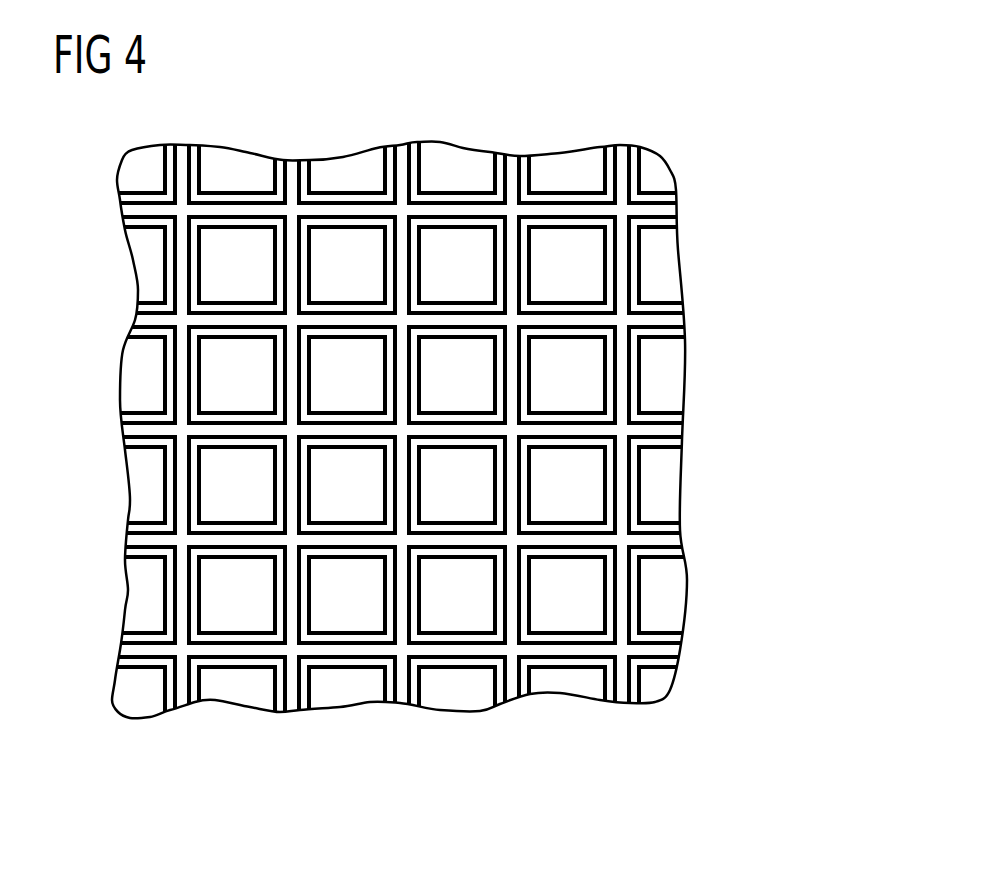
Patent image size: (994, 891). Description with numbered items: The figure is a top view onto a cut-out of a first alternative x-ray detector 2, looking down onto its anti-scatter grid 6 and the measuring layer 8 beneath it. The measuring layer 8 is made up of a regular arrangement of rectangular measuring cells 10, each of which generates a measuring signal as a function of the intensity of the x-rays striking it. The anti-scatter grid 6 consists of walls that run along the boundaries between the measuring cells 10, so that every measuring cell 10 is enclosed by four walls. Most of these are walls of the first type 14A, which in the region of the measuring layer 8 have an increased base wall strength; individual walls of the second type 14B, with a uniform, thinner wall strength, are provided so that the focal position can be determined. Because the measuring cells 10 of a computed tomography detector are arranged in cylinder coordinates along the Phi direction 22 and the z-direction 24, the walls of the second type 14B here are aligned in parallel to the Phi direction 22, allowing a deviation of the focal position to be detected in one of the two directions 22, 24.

The x-ray detector 2 is at (690, 125).
The anti-scatter grid 6 is at (629, 738).
The measuring layer 8 is at (573, 738).
The measuring cell 10 is at (473, 373).
The wall of the first type 14A is at (357, 300).
The wall of the second type 14B is at (330, 415).
The Phi direction 22 is at (785, 427).
The z-direction 24 is at (235, 775).